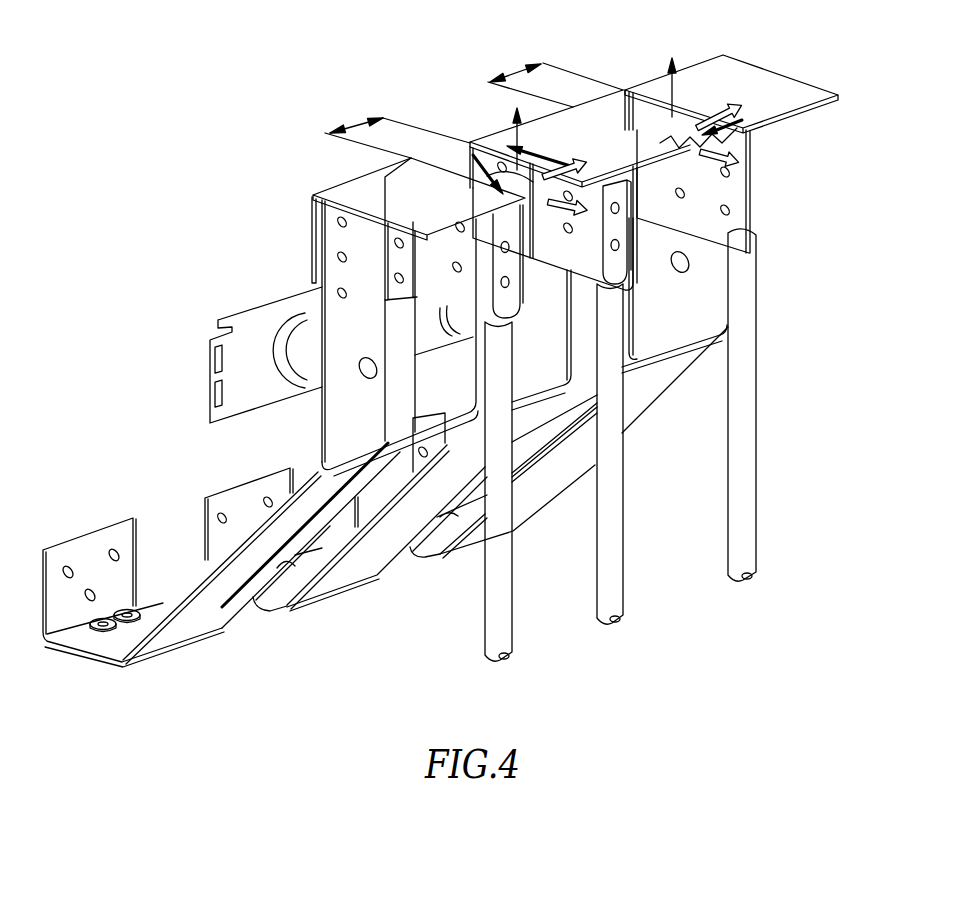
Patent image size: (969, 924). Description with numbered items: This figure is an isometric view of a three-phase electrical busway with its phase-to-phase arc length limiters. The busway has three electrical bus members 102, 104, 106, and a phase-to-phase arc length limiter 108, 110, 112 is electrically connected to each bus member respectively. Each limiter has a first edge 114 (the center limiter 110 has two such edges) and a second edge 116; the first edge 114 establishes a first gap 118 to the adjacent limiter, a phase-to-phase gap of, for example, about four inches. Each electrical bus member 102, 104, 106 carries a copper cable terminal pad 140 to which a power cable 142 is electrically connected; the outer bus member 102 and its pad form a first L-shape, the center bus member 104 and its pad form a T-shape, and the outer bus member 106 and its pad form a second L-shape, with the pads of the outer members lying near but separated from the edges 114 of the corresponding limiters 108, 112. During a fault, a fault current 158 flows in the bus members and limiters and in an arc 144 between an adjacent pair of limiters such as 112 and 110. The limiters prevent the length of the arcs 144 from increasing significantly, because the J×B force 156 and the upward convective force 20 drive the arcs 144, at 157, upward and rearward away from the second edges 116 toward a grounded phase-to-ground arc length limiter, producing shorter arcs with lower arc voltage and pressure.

The convective force 20 is at (515, 128).
The electrical bus member 102 is at (533, 512).
The electrical bus member 104 is at (340, 584).
The electrical bus member 106 is at (195, 636).
The phase-to-phase arc length limiter 108 is at (708, 57).
The phase-to-phase arc length limiter 110 is at (492, 130).
The phase-to-phase arc length limiter 112 is at (331, 185).
The first edge 114 is at (418, 163).
The second edge 116 is at (483, 217).
The first gap 118 is at (362, 121).
The cable terminal pad 140 is at (473, 297).
The power cable 142 is at (492, 613).
The arc 144 is at (487, 187).
The J×B force 156 is at (553, 211).
The arc motion 157 is at (584, 165).
The fault current 158 is at (540, 163).